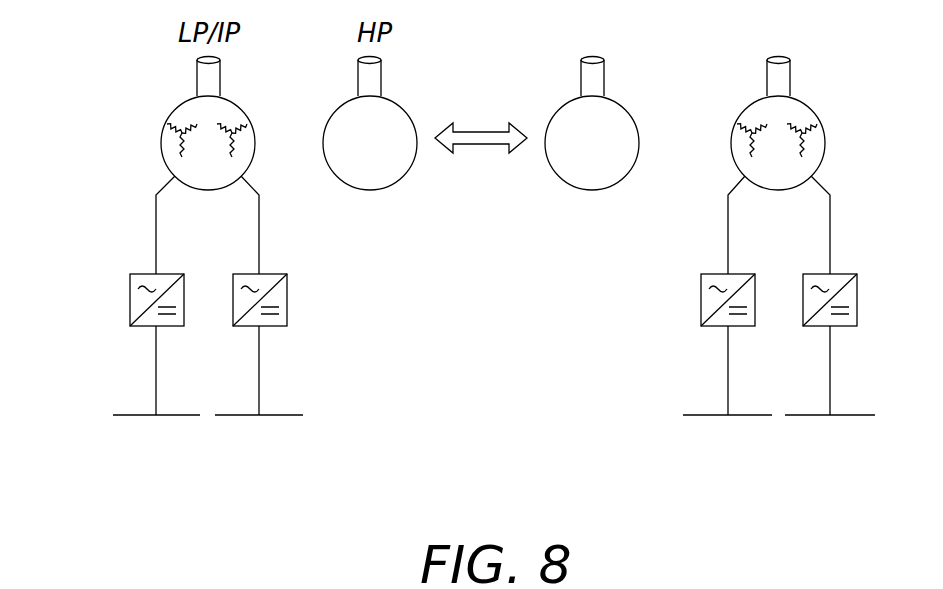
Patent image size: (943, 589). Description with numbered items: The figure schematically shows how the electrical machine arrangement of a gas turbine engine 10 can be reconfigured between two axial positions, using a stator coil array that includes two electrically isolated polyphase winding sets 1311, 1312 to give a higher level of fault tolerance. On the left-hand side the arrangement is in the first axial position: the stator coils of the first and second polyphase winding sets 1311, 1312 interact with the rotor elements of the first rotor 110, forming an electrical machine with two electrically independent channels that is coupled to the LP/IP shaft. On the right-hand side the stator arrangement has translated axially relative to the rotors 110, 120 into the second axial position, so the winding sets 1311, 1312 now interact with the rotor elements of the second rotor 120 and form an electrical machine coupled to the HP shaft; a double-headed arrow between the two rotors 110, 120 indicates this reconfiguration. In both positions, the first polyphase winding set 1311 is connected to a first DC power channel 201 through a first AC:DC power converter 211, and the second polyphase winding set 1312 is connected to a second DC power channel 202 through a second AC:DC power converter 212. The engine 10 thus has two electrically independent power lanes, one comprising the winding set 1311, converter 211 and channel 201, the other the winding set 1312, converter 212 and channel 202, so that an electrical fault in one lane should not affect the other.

The gas turbine engine 10 is at (120, 52).
The first rotor 110 is at (162, 148).
The second rotor 120 is at (372, 190).
The first polyphase winding set 1311 is at (735, 125).
The second polyphase winding set 1312 is at (851, 58).
The first AC:DC power converter 211 is at (142, 273).
The second AC:DC power converter 212 is at (273, 273).
The first DC power channel 201 is at (130, 417).
The second DC power channel 202 is at (850, 417).